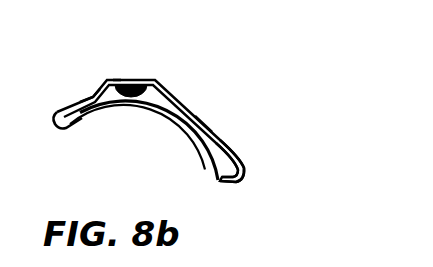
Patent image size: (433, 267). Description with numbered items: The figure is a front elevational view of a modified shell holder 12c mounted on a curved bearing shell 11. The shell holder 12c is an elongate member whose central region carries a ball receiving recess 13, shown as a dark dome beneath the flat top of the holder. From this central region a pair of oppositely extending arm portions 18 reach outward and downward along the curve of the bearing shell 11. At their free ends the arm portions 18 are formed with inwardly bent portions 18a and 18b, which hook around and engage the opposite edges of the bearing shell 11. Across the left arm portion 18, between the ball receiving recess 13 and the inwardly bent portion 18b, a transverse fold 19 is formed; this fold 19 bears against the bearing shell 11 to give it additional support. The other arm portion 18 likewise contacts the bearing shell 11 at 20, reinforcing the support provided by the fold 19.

The bearing shell 11 is at (207, 148).
The shell holder 12c is at (117, 78).
The ball receiving recess 13 is at (136, 84).
The arm portions 18 is at (180, 100).
The inwardly bent portion 18a is at (237, 183).
The inwardly bent portion 18b is at (57, 122).
The transverse fold 19 is at (88, 99).
The contact point 20 is at (205, 128).